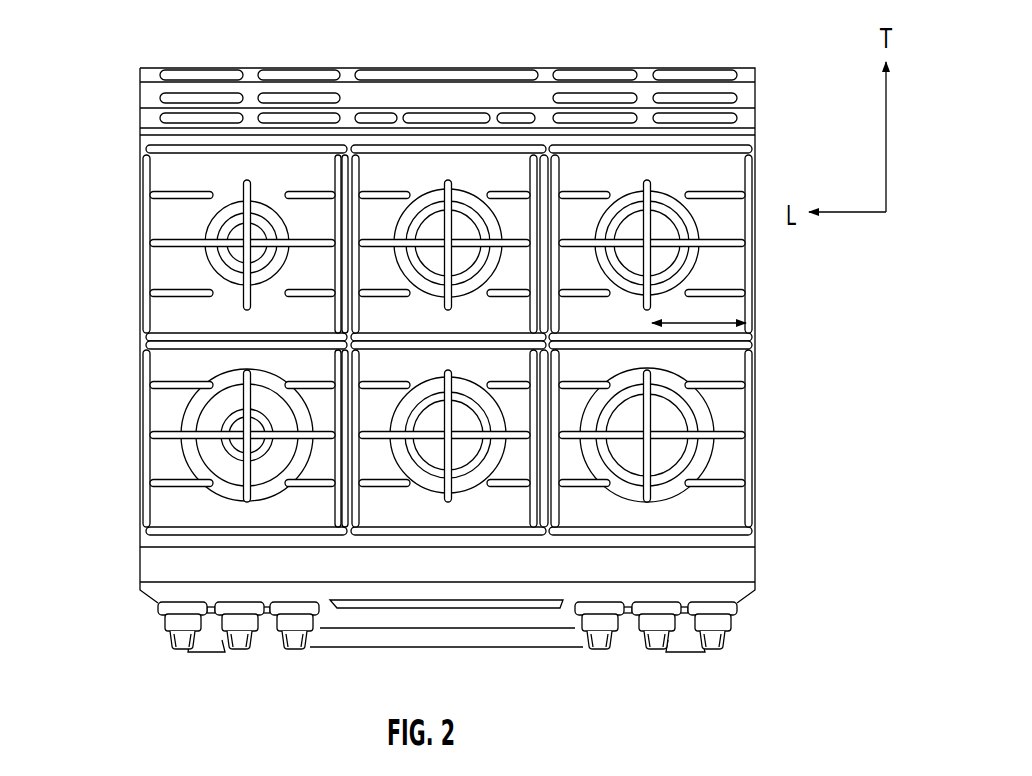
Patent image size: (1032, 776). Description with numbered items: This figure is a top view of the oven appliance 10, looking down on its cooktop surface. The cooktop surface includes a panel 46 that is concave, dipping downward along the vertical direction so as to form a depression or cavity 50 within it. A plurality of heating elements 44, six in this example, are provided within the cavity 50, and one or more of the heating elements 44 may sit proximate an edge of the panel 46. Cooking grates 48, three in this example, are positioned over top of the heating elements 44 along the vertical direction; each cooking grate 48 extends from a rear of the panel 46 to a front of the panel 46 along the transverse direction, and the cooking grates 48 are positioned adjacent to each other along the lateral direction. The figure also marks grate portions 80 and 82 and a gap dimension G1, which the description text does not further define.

The oven appliance 10 is at (90, 134).
The heating elements 44 is at (225, 458).
The panel 46 is at (712, 360).
The cooking grates 48 is at (164, 240).
The cavity 50 is at (608, 512).
The grate frame bar 80 is at (215, 333).
The grate support rod 82 is at (188, 388).
The gap between grate and side G1 is at (746, 318).